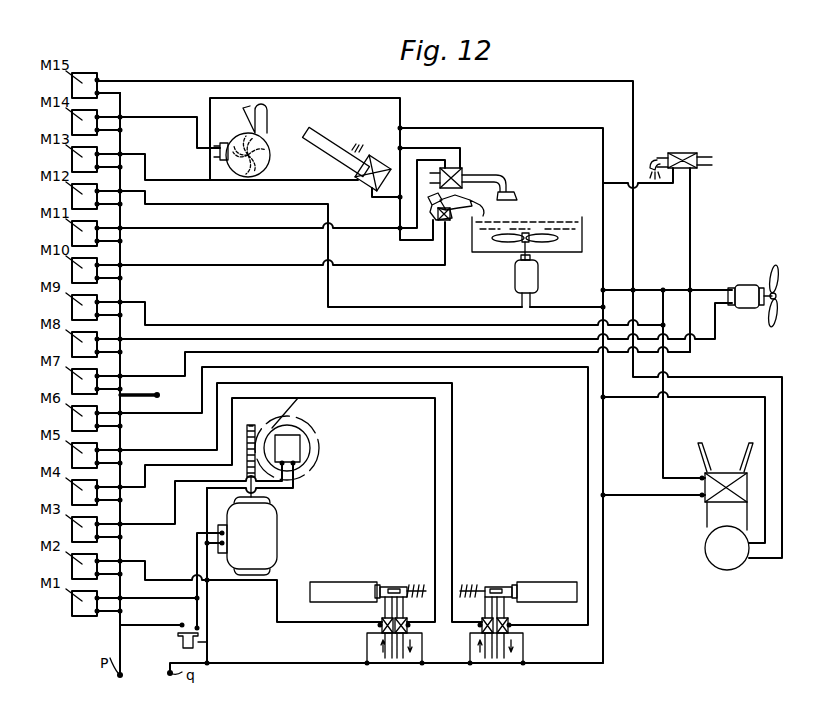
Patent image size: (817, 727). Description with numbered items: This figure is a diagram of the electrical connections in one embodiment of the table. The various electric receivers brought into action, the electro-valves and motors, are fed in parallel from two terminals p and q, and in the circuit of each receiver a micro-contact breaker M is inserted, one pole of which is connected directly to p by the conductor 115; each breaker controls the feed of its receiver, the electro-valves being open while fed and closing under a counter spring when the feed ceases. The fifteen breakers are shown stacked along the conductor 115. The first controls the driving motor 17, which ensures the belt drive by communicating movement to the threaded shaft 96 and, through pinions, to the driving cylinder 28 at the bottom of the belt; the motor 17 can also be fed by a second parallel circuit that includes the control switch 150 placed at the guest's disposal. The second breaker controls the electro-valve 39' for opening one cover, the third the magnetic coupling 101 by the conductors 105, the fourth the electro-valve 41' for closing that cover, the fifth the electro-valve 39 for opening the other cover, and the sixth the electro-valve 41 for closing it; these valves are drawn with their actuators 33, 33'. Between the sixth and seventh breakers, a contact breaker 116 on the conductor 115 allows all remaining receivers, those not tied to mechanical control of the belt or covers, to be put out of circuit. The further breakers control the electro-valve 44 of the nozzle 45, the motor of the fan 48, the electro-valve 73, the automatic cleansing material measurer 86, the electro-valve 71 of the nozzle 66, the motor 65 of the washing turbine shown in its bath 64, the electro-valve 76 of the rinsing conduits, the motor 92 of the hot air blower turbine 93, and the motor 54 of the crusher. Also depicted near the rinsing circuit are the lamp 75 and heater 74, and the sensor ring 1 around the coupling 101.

The thermostat sensor ring 1 is at (302, 462).
The driving motor 17 is at (262, 533).
The driving cylinder 28 is at (307, 465).
The solenoid actuator 33 is at (518, 577).
The solenoid actuator 33' is at (368, 580).
The electro-valve 39 is at (472, 627).
The electro-valve 39' is at (354, 627).
The electro-valve 41 is at (526, 627).
The electro-valve 41' is at (426, 627).
The electro-valve 44 is at (685, 153).
The nozzle 45 is at (653, 158).
The fan 48 is at (770, 325).
The motor of the crusher 54 is at (730, 557).
The water bath 64 is at (553, 237).
The motor of the washing turbine 65 is at (530, 277).
The nozzle 66 is at (503, 175).
The electro-valve 71 is at (462, 171).
The electro-valve 73 is at (723, 497).
The heater 74 is at (357, 150).
The lamp 75 is at (318, 135).
The electro-valve of the rinsing conduits 76 is at (372, 190).
The automatic cleansing material measurer 86 is at (446, 222).
The motor of the hot air blower turbine 92 is at (216, 156).
The blower 93 is at (262, 120).
The threaded shaft 96 is at (252, 425).
The magnetic coupling 101 is at (293, 440).
The conductors 105 is at (207, 505).
The conductor 115 is at (103, 636).
The contact breaker 116 is at (163, 401).
The control switch 150 is at (207, 642).